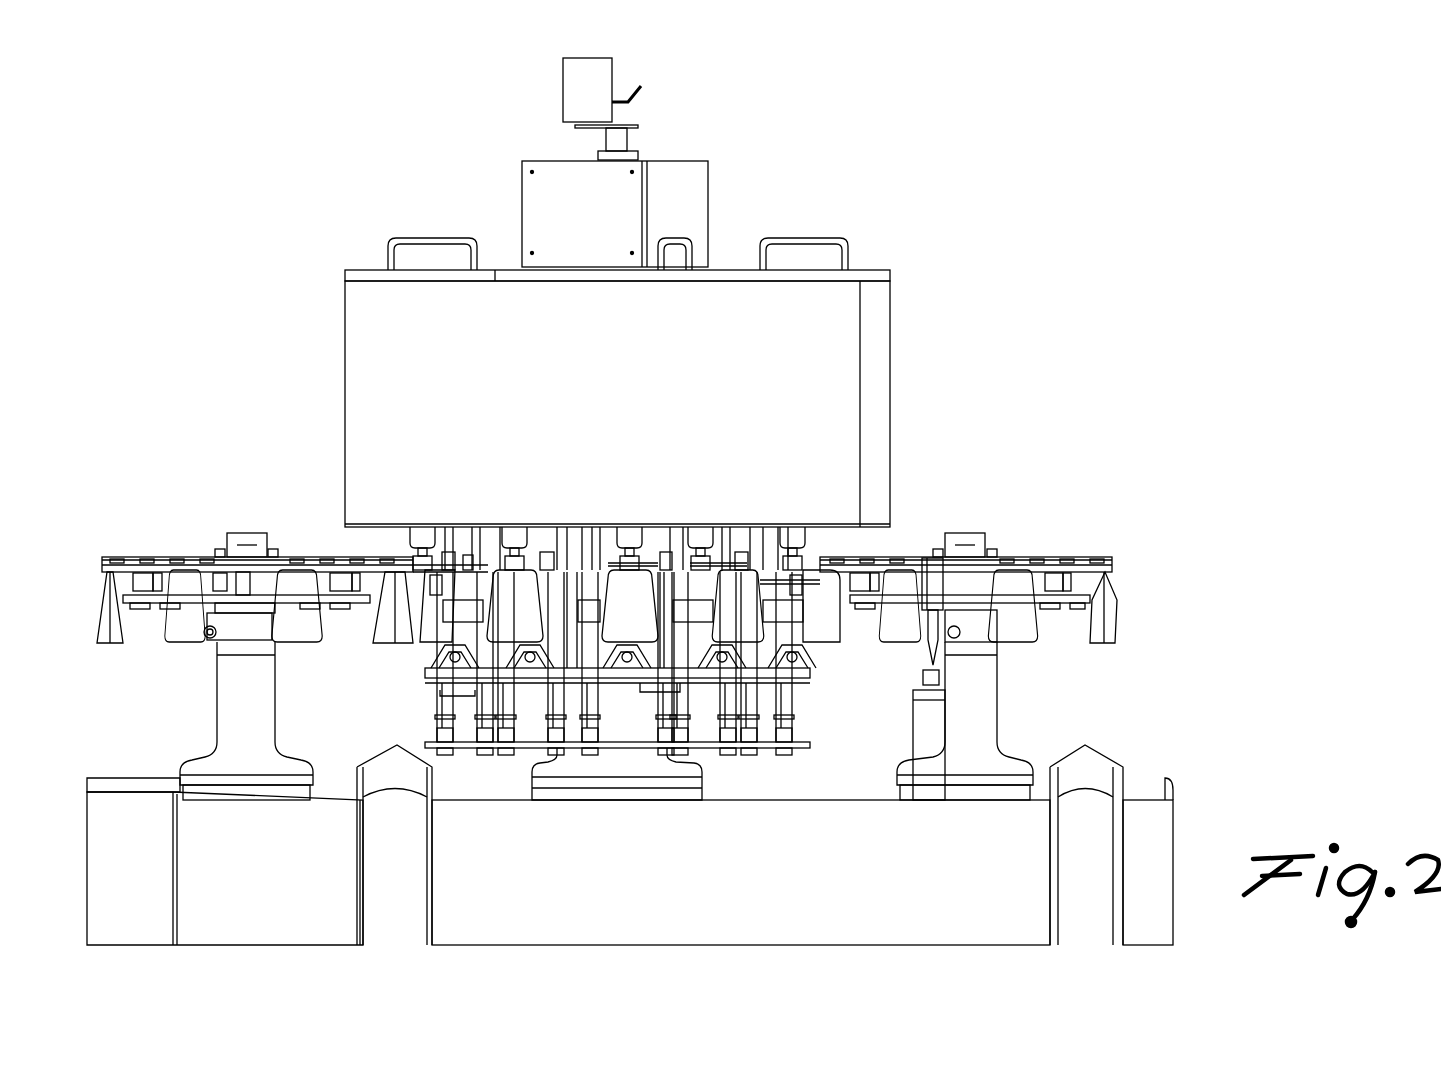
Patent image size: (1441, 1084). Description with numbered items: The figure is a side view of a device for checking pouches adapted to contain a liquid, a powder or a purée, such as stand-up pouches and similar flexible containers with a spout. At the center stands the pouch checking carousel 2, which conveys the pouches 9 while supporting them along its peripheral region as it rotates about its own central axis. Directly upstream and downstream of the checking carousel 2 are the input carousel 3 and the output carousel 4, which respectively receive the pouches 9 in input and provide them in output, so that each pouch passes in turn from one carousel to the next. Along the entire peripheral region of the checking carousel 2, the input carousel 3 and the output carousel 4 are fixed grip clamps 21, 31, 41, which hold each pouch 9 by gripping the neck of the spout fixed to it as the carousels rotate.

The pouch checking carousel 2 is at (911, 470).
The input carousel 3 is at (975, 518).
The output carousel 4 is at (213, 514).
The pouch 9 is at (106, 645).
The grip clamp 21 is at (428, 578).
The grip clamp 31 is at (1097, 560).
The grip clamp 41 is at (122, 557).